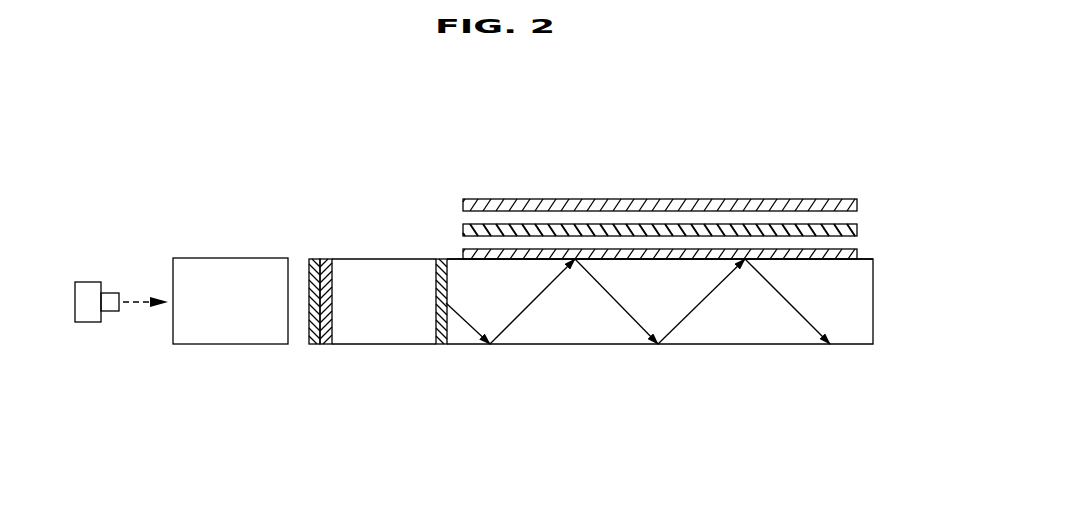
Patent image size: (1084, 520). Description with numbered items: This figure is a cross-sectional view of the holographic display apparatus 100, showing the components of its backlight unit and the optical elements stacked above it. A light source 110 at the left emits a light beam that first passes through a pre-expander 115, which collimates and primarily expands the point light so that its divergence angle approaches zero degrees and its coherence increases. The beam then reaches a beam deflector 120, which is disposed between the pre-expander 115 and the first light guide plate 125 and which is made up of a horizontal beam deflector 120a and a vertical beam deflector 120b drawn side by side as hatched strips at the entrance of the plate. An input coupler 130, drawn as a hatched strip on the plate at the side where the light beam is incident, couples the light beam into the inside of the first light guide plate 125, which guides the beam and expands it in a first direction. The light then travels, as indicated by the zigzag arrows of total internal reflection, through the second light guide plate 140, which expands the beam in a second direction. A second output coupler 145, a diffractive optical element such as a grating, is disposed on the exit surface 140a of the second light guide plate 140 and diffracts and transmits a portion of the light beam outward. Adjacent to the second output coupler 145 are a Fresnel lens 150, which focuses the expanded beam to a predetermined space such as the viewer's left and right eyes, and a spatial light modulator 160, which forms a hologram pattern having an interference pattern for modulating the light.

The holographic display apparatus 100 is at (176, 173).
The light source 110 is at (89, 318).
The pre-expander 115 is at (238, 337).
The beam deflector 120 is at (268, 200).
The horizontal beam deflector 120a is at (315, 260).
The vertical beam deflector 120b is at (328, 260).
The first light guide plate 125 is at (383, 338).
The input coupler 130 is at (440, 338).
The second light guide plate 140 is at (575, 338).
The exit surface 140a is at (872, 259).
The second output coupler 145 is at (858, 254).
The Fresnel lens 150 is at (858, 229).
The spatial light modulator 160 is at (858, 204).